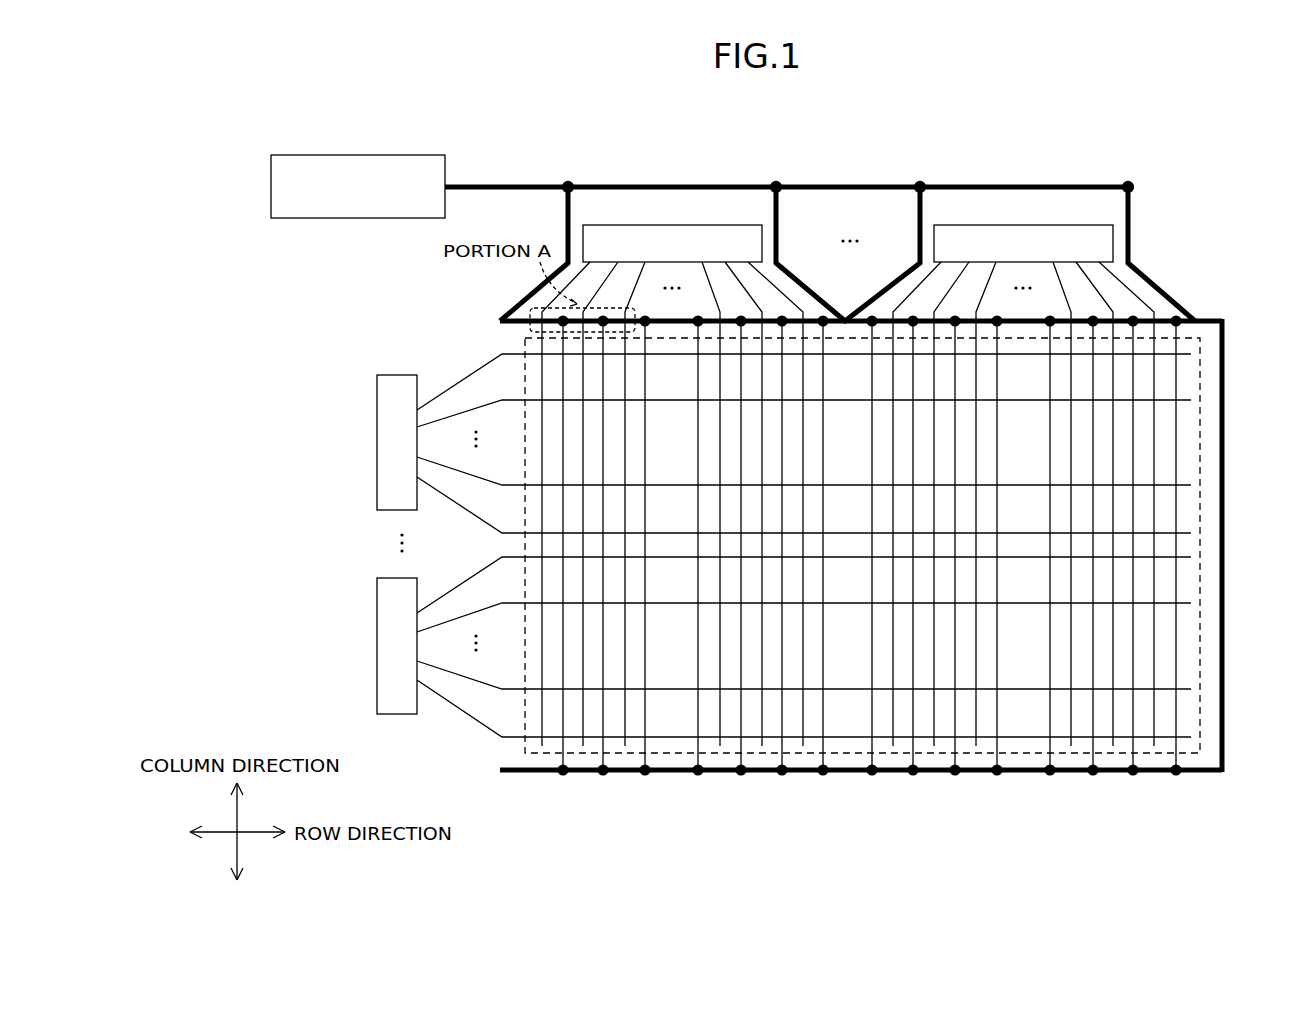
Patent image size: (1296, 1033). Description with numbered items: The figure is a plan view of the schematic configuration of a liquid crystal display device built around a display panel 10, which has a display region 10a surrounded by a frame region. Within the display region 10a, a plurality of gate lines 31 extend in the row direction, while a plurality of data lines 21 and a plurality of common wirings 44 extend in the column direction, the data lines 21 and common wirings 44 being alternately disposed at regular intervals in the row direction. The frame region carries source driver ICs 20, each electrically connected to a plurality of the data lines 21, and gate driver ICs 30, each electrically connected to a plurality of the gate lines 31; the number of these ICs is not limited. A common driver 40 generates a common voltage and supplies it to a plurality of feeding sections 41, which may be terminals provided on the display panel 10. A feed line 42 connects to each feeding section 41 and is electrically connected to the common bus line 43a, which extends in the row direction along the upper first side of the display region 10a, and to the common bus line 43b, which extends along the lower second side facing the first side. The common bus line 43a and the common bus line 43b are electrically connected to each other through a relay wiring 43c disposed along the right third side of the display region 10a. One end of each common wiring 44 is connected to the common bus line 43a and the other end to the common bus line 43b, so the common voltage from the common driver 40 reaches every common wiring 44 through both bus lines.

The display panel 10 is at (1232, 170).
The display region 10a is at (1200, 578).
The source driver IC 20 is at (706, 225).
The data line 21 is at (625, 745).
The gate driver IC 30 is at (377, 446).
The gate line 31 is at (843, 737).
The common driver 40 is at (415, 155).
The feeding section 41 is at (569, 182).
The feed line 42 is at (1131, 225).
The common bus line 43a is at (1205, 318).
The common bus line 43b is at (1206, 774).
The relay wiring 43c is at (1224, 436).
The common wiring 44 is at (602, 745).